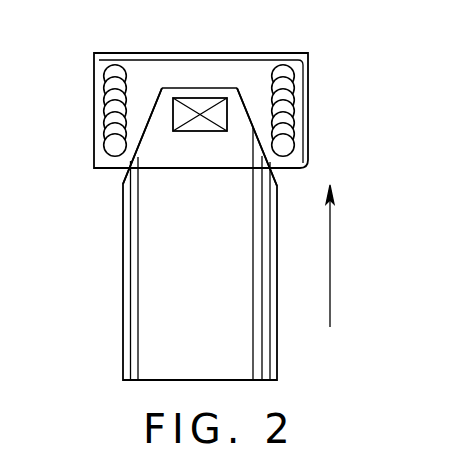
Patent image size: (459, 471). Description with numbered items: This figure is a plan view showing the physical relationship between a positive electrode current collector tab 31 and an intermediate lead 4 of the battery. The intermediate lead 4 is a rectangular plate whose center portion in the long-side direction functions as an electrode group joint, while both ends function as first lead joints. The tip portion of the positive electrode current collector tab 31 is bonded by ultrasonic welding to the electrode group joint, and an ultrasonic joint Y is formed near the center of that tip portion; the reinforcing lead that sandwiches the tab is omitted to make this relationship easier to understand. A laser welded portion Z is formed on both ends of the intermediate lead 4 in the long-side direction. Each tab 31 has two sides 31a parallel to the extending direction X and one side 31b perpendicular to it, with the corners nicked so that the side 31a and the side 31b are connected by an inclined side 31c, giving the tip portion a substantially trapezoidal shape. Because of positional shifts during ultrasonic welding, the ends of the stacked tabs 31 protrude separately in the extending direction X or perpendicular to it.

The intermediate lead 4 is at (204, 110).
The positive electrode current collector tab 31 is at (201, 197).
The side 31a is at (123, 276).
The side 31b is at (144, 79).
The inclined side 31c is at (150, 117).
The extending direction X is at (340, 256).
The ultrasonic joint Y is at (180, 118).
The laser welded portion Z is at (100, 90).